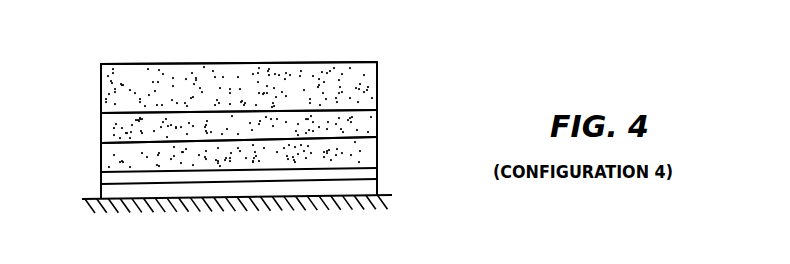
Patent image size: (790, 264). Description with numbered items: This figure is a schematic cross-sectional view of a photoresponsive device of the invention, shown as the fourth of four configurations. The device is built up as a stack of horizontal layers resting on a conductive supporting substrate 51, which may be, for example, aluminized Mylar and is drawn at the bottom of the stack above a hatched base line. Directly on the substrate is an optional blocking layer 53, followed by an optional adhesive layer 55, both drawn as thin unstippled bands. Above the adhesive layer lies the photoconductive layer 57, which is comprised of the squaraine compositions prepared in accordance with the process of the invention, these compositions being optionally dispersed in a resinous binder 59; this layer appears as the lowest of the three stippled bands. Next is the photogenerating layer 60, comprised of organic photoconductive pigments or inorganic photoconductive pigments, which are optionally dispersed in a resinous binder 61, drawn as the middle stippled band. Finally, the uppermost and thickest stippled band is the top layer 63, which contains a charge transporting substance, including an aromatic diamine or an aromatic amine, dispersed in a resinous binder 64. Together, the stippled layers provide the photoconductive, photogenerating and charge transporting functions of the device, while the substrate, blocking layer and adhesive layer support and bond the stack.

The conductive supporting substrate 51 is at (386, 205).
The blocking layer 53 is at (380, 187).
The adhesive layer 55 is at (381, 175).
The photoconductive layer 57 is at (380, 150).
The resinous binder 59 is at (107, 153).
The photogenerating layer 60 is at (378, 118).
The resinous binder 61 is at (103, 126).
The top layer 63 is at (378, 72).
The resinous binder 64 is at (112, 82).